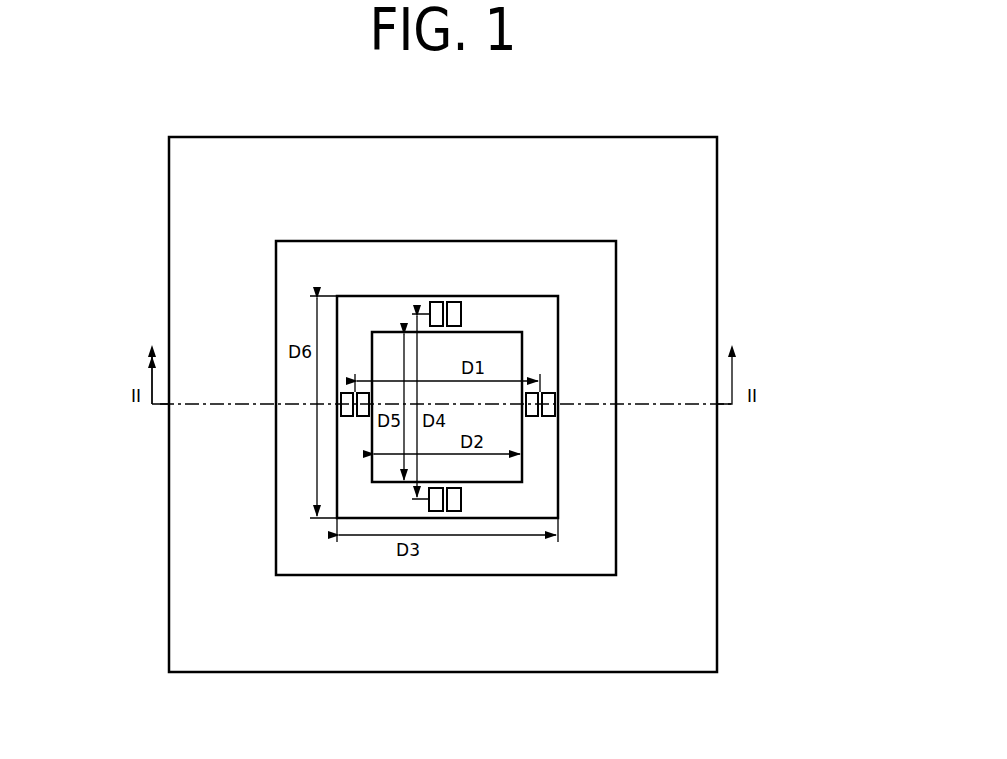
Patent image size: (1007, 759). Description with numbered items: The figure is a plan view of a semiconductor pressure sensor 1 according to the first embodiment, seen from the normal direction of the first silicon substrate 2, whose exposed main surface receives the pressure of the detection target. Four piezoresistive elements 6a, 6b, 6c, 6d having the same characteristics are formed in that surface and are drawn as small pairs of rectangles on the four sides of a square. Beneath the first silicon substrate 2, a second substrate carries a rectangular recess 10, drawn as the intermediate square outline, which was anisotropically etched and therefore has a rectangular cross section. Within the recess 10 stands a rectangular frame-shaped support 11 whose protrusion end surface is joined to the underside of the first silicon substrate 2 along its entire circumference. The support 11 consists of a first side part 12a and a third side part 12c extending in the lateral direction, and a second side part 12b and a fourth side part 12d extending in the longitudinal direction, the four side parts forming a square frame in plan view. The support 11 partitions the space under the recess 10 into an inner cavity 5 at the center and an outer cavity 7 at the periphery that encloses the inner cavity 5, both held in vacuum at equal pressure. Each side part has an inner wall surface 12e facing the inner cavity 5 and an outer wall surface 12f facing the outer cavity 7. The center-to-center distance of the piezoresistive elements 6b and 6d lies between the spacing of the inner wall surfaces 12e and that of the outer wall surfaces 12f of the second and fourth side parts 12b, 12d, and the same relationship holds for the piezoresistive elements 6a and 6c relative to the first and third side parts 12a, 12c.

The semiconductor pressure sensor 1 is at (670, 127).
The first silicon substrate 2 is at (685, 596).
The inner cavity 5 is at (525, 362).
The piezoresistive element 6a is at (447, 301).
The piezoresistive element 6b is at (353, 421).
The piezoresistive element 6c is at (443, 513).
The piezoresistive element 6d is at (541, 418).
The outer cavity 7 is at (590, 278).
The recess 10 is at (583, 522).
The support 11 is at (543, 490).
The first side part 12a is at (402, 317).
The second side part 12b is at (352, 460).
The third side part 12c is at (488, 505).
The fourth side part 12d is at (550, 376).
The inner wall surface 12e is at (490, 336).
The outer wall surface 12f is at (517, 297).